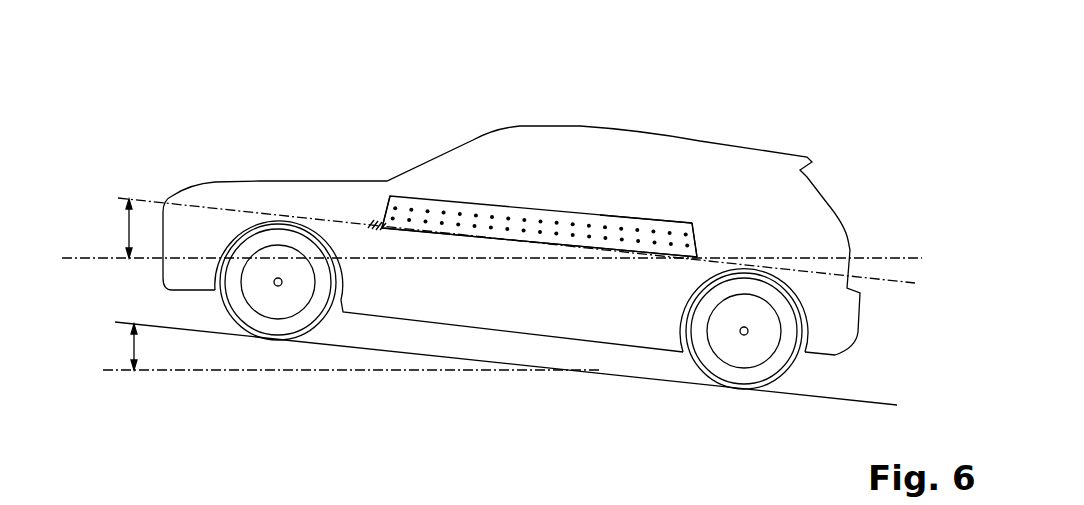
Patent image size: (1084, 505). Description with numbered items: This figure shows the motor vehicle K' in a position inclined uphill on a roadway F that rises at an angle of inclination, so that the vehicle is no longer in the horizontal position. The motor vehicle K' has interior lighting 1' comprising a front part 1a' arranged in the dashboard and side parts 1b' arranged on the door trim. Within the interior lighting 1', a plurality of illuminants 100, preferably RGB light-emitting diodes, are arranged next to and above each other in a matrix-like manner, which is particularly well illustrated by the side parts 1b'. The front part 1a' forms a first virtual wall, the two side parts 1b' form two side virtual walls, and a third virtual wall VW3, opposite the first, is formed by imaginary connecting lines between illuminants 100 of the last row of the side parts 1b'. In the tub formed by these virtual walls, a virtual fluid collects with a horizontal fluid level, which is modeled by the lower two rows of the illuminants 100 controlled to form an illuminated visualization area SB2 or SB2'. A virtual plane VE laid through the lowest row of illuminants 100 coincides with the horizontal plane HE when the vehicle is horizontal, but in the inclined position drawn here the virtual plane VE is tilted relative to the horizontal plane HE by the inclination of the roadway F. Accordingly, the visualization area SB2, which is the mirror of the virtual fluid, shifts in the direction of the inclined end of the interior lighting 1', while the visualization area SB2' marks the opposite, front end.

The motor vehicle K' is at (511, 204).
The interior lighting 1' is at (539, 197).
The front part of the interior lighting 1a' is at (311, 170).
The side parts of the interior lighting 1b' is at (671, 160).
The third virtual wall VW3 is at (692, 232).
The illuminants 100 is at (377, 222).
The visualization area SB2 is at (539, 170).
The visualization area SB2' is at (321, 188).
The horizontal plane HE is at (92, 257).
The virtual plane VE is at (162, 203).
The roadway F is at (607, 377).